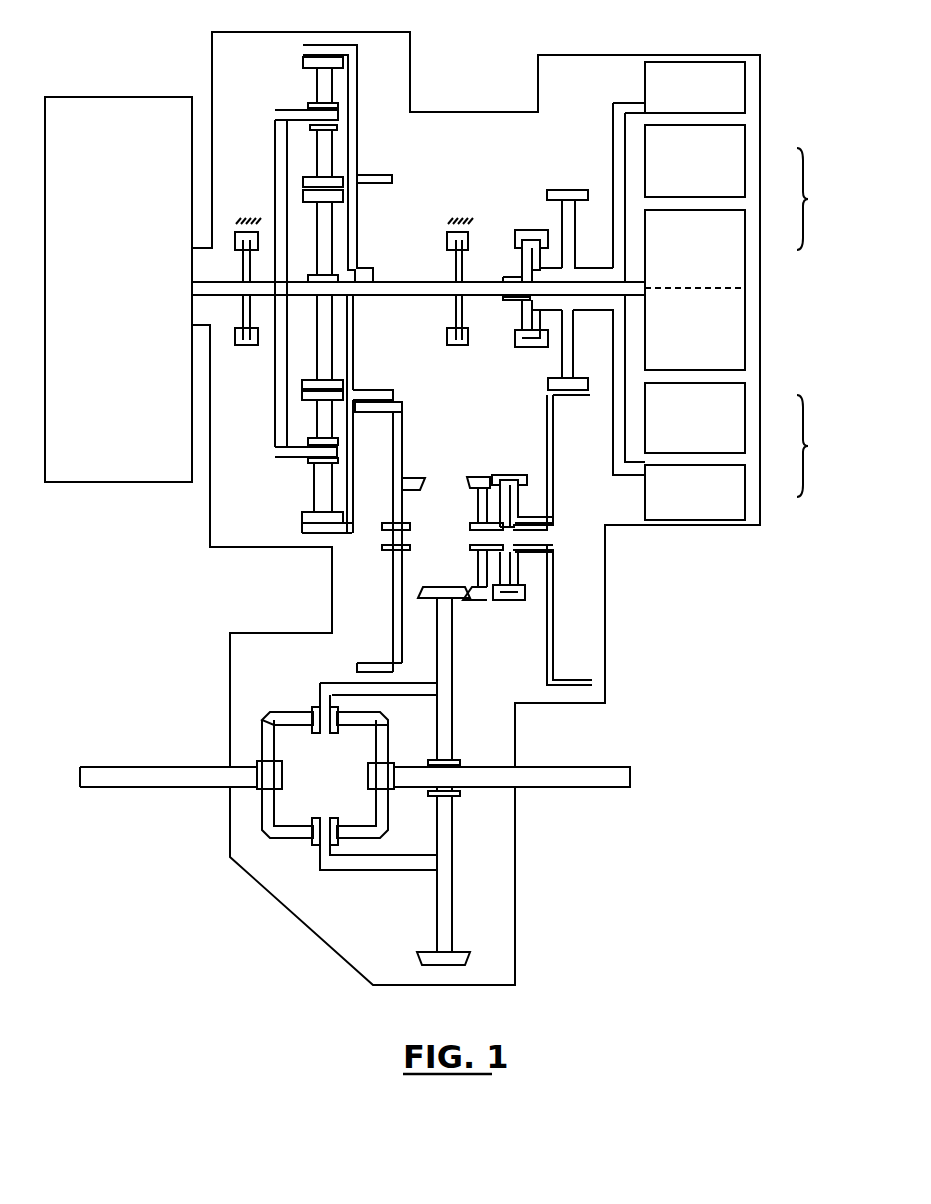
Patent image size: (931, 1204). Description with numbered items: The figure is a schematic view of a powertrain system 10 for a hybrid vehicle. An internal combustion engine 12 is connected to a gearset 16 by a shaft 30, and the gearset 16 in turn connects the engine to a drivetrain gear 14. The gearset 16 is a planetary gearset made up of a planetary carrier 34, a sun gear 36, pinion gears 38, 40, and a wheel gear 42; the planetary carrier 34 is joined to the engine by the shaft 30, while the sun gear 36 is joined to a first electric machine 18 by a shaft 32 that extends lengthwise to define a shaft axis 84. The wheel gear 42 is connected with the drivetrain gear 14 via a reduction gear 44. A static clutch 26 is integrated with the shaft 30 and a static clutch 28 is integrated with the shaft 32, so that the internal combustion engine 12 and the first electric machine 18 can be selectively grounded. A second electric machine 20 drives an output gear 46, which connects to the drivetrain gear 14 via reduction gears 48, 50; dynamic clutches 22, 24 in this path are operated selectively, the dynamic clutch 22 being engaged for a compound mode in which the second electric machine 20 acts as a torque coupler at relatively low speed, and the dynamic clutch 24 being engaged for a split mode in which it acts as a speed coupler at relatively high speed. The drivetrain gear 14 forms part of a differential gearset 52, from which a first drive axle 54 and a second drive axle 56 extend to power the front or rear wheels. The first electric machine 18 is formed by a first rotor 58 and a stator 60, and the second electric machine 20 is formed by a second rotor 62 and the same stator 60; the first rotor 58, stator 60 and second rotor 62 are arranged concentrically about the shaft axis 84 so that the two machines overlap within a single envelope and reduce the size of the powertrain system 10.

The powertrain system 10 is at (168, 962).
The internal combustion engine 12 is at (141, 473).
The drivetrain gear 14 is at (413, 944).
The gearset 16 is at (366, 148).
The first electric machine 18 is at (828, 199).
The second electric machine 20 is at (828, 446).
The dynamic clutch 22 is at (531, 220).
The dynamic clutch 24 is at (507, 465).
The static clutch 26 is at (233, 212).
The static clutch 28 is at (460, 200).
The shaft 30 is at (228, 290).
The shaft 32 is at (412, 297).
The planetary carrier 34 is at (273, 149).
The sun gear 36 is at (338, 240).
The pinion gear 38 is at (306, 425).
The pinion gear 40 is at (305, 84).
The wheel gear 42 is at (297, 520).
The reduction gear 44 is at (373, 658).
The output gear 46 is at (575, 183).
The reduction gear 48 is at (543, 406).
The reduction gear 50 is at (470, 473).
The differential gearset 52 is at (298, 688).
The first drive axle 54 is at (142, 790).
The second drive axle 56 is at (578, 777).
The first rotor 58 is at (728, 240).
The stator 60 is at (725, 172).
The second rotor 62 is at (728, 86).
The shaft axis 84 is at (718, 289).